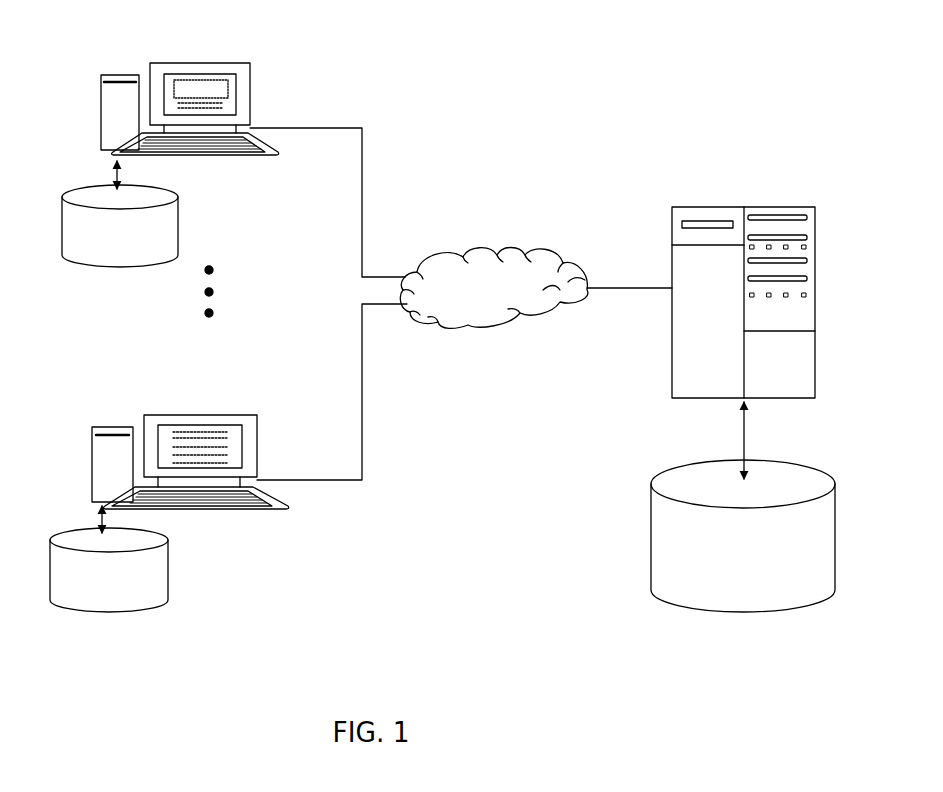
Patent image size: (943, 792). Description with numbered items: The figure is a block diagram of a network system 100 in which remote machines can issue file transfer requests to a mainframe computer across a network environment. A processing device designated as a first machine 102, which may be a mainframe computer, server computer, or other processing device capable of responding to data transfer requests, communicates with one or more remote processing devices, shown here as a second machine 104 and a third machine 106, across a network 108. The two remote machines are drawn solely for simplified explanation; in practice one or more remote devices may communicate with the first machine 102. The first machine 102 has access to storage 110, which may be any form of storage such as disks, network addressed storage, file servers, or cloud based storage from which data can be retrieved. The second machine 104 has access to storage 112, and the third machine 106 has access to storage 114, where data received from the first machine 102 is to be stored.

The network system 100 is at (420, 61).
The first machine 102 is at (700, 207).
The second machine 104 is at (168, 63).
The third machine 106 is at (160, 413).
The network 108 is at (501, 248).
The storage 110 is at (658, 473).
The storage 112 is at (102, 182).
The storage 114 is at (85, 526).